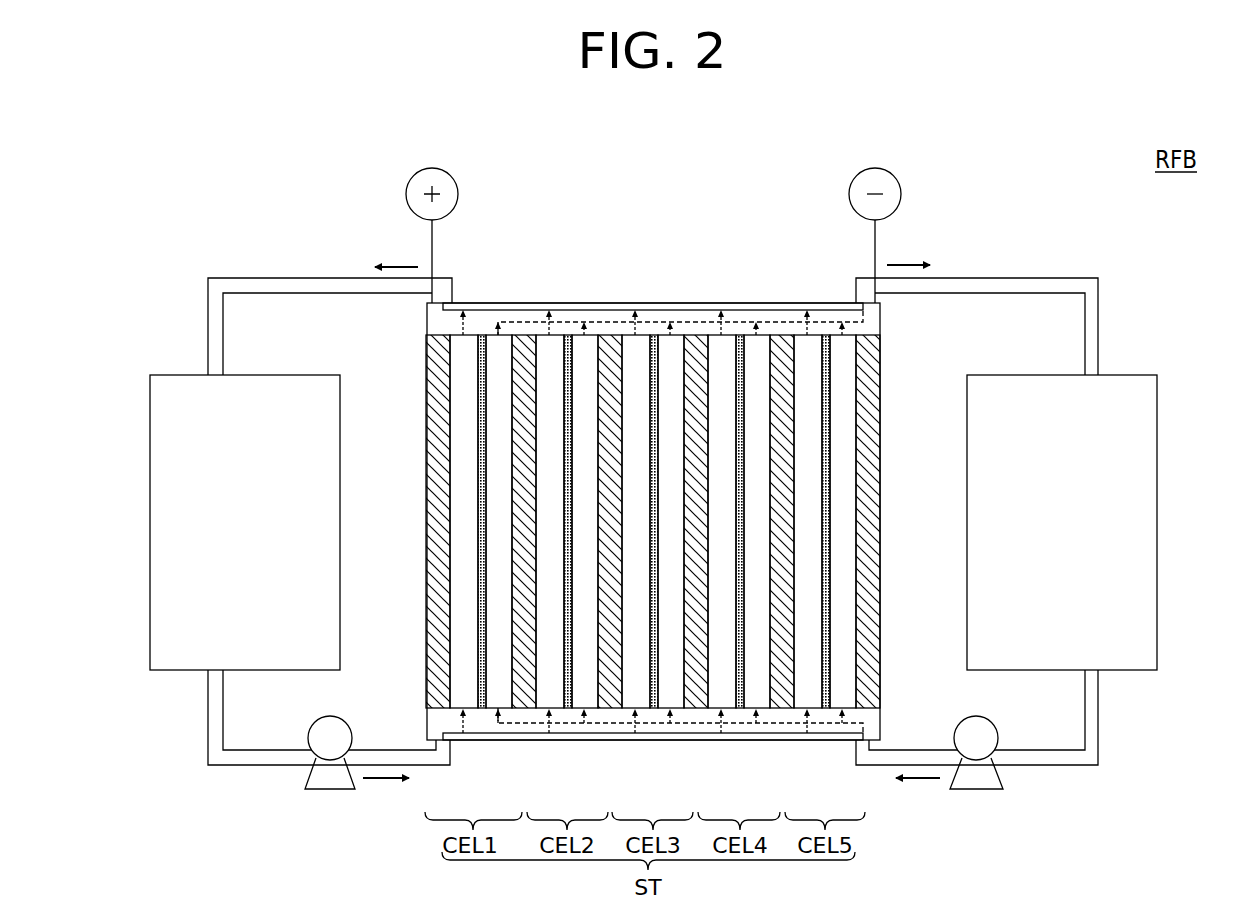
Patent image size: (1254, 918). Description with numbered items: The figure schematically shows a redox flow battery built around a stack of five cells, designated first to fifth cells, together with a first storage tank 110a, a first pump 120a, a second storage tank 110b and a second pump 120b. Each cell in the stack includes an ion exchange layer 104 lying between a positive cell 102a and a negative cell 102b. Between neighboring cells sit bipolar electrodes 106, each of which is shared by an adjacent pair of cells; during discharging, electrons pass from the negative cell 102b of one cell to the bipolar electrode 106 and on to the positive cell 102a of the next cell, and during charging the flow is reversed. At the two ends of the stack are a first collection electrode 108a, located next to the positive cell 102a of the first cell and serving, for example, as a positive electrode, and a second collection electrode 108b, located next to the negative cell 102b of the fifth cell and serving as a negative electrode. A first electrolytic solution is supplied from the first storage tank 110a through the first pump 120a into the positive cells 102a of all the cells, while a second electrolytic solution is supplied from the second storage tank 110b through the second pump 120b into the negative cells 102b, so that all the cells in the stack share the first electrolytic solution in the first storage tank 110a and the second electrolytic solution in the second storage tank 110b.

The positive cell 102a is at (459, 695).
The negative cell 102b is at (502, 695).
The ion exchange layer 104 is at (655, 345).
The bipolar electrode 106 is at (610, 345).
The first collection electrode 108a is at (438, 350).
The second collection electrode 108b is at (869, 350).
The first storage tank 110a is at (163, 521).
The second storage tank 110b is at (1145, 522).
The first pump 120a is at (330, 779).
The second pump 120b is at (976, 779).